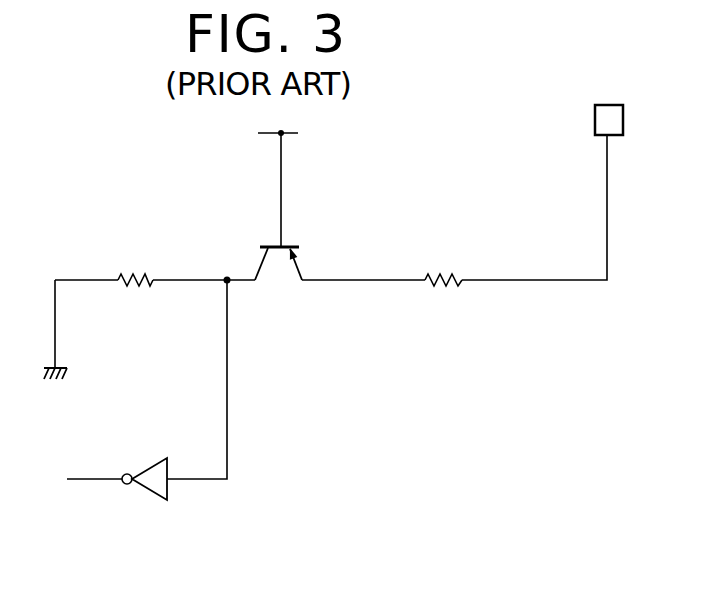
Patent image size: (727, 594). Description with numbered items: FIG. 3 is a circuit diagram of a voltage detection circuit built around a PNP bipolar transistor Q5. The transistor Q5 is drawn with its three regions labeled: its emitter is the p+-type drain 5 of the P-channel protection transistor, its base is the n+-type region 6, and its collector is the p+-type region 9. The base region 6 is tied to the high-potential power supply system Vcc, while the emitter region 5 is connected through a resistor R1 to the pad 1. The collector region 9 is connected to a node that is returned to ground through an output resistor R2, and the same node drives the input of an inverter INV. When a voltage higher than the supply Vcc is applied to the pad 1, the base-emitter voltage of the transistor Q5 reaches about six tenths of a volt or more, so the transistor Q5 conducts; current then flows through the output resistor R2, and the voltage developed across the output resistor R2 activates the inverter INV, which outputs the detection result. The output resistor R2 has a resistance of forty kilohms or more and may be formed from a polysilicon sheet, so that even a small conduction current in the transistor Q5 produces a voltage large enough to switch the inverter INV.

The pad 1 is at (623, 125).
The drain 5 is at (303, 272).
The n+-type region 6 is at (286, 244).
The p+-type region 9 is at (260, 266).
The bipolar transistor Q5 is at (288, 294).
The resistor R1 is at (443, 269).
The output resistor R2 is at (136, 293).
The inverter INV is at (155, 500).
The high-potential power supply system Vcc is at (299, 183).